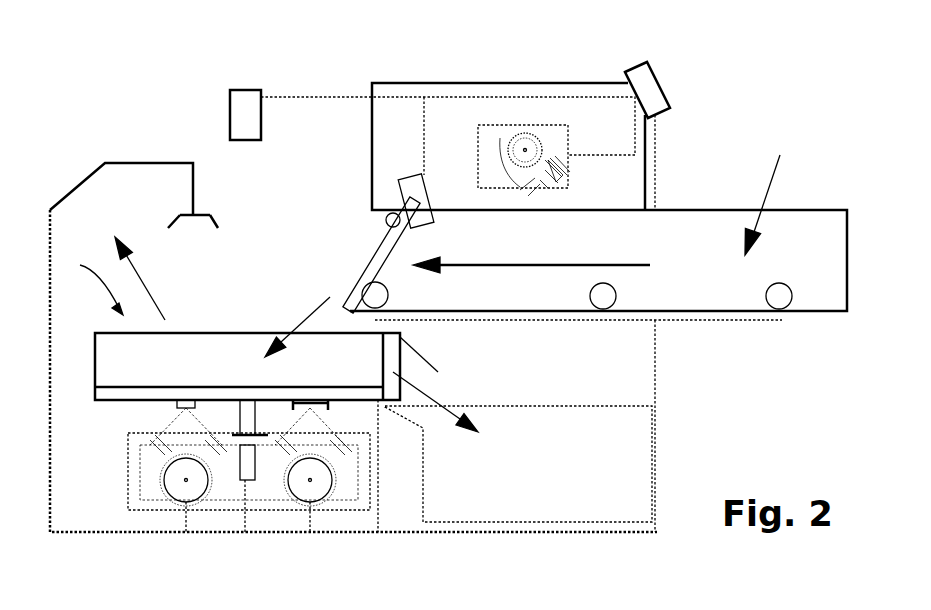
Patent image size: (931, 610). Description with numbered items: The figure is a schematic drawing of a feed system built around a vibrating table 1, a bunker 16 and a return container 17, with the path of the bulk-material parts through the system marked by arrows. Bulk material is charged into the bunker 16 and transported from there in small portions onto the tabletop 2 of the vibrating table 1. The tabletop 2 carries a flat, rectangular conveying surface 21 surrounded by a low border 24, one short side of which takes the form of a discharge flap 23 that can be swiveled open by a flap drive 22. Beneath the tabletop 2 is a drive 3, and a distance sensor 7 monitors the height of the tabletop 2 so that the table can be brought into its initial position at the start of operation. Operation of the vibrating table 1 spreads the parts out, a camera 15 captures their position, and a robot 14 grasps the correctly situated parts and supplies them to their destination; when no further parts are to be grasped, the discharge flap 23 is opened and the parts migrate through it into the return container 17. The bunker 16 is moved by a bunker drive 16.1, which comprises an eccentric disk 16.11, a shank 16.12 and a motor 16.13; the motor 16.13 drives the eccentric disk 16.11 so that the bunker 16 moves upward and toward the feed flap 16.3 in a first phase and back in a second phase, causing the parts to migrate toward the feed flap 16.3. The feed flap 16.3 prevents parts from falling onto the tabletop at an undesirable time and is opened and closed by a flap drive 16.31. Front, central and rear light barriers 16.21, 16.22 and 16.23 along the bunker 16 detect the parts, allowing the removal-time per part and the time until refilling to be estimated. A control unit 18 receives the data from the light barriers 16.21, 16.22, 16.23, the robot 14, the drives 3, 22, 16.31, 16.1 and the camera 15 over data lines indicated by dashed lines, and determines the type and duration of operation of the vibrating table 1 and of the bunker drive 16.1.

The vibrating table 1 is at (353, 323).
The tabletop 2 is at (247, 348).
The drive 3 is at (203, 520).
The distance sensor 7 is at (245, 482).
The robot 14 is at (118, 163).
The camera 15 is at (242, 90).
The bunker 16 is at (690, 227).
The bunker drive 16.1 is at (550, 170).
The eccentric disk 16.11 is at (548, 173).
The shank 16.12 is at (520, 187).
The motor 16.13 is at (513, 137).
The front light barrier 16.21 is at (777, 297).
The central light barrier 16.22 is at (603, 312).
The rear light barrier 16.23 is at (367, 293).
The feed flap 16.3 is at (372, 262).
The flap drive 16.31 is at (417, 197).
The return container 17 is at (523, 510).
The control unit 18 is at (648, 92).
The conveying surface 21 is at (107, 400).
The flap drive 22 is at (390, 360).
The discharge flap 23 is at (428, 355).
The border 24 is at (245, 357).